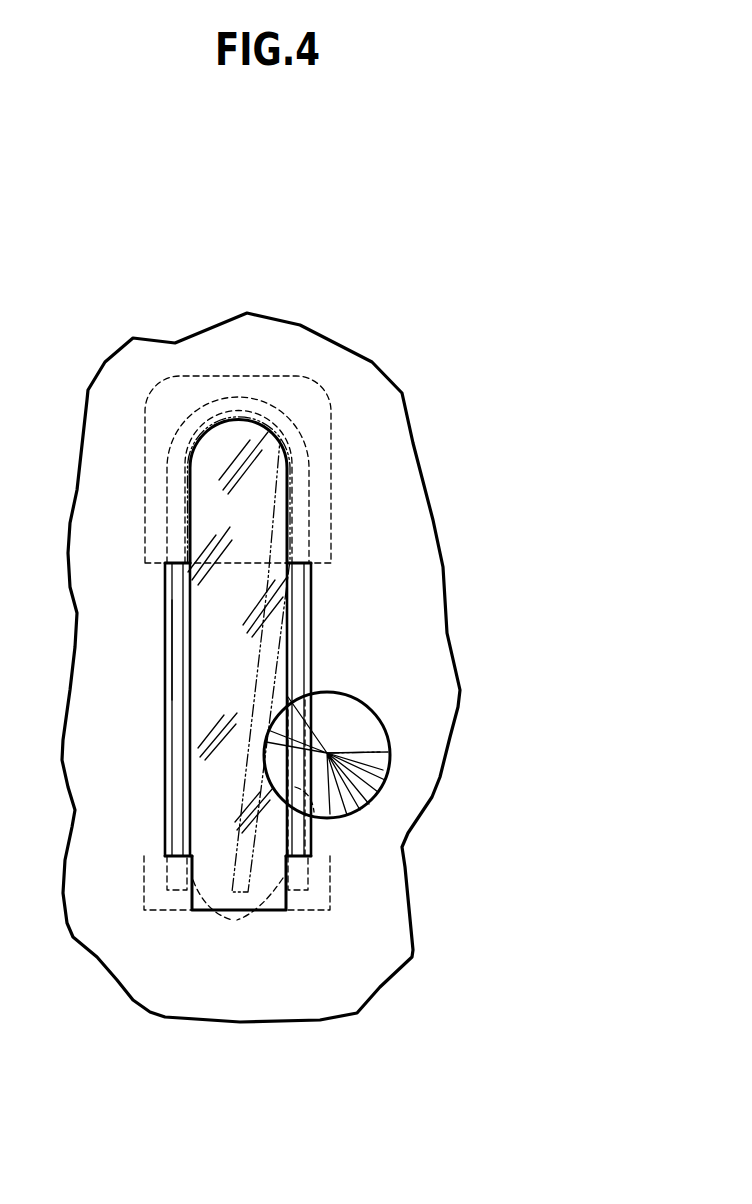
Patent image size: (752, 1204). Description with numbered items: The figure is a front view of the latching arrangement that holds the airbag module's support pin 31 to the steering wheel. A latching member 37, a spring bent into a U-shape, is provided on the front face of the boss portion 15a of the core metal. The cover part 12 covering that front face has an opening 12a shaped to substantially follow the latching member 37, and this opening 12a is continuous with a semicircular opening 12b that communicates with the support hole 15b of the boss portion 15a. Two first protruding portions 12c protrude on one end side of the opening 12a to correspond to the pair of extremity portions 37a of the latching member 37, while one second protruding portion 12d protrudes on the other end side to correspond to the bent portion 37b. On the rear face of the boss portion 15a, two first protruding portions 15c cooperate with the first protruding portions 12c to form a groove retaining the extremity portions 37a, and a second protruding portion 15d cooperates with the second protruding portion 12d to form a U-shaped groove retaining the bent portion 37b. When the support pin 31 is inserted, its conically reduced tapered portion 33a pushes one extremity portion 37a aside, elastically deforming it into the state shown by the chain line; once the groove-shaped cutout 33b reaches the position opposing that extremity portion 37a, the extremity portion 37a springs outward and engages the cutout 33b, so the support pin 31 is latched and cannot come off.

The cover part 12 is at (436, 532).
The opening 12a is at (167, 634).
The semicircular opening 12b is at (377, 725).
The first protruding portions 12c is at (283, 873).
The second protruding portion 12d is at (192, 512).
The boss portion 15a is at (252, 664).
The support hole 15b is at (380, 706).
The first protruding portions 15c is at (145, 876).
The second protruding portion 15d is at (348, 466).
The support pin 31 is at (345, 693).
The tapered portion 33a is at (377, 770).
The cutout 33b is at (314, 812).
The latching member 37 is at (166, 702).
The extremity portions 37a is at (232, 920).
The bent portion 37b is at (233, 408).